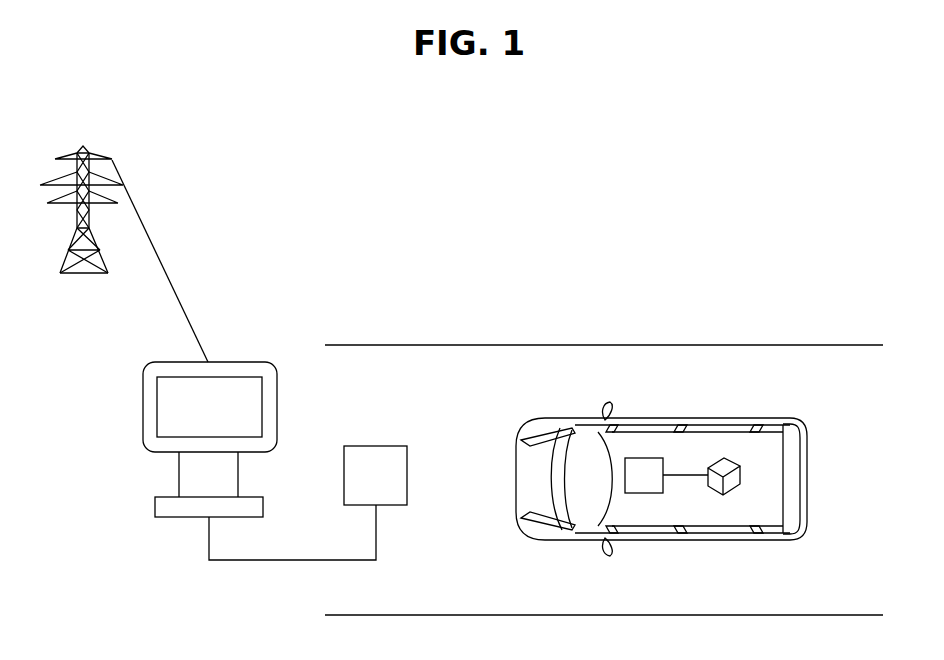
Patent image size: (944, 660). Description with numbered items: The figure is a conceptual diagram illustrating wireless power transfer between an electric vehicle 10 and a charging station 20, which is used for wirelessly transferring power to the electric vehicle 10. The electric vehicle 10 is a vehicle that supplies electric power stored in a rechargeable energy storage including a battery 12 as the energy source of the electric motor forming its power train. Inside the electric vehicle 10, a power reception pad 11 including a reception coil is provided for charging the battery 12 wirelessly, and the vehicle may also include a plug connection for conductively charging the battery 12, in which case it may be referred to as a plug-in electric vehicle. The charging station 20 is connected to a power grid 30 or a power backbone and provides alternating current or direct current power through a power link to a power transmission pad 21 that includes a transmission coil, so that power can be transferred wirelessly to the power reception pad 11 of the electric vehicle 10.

The electric vehicle 10 is at (680, 420).
The power reception pad 11 is at (640, 457).
The battery 12 is at (724, 457).
The charging station 20 is at (237, 362).
The power transmission pad 21 is at (373, 446).
The power grid 30 is at (80, 152).